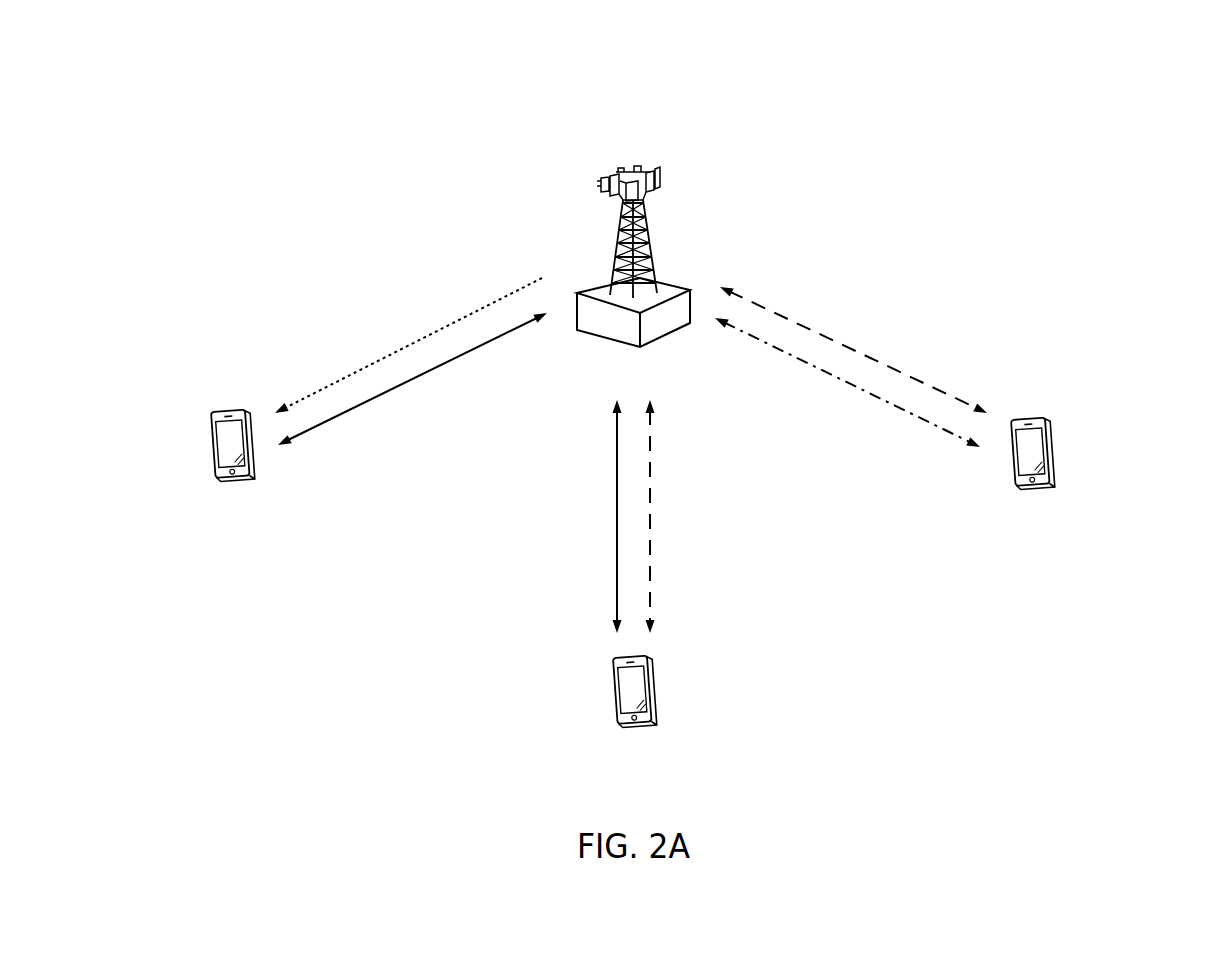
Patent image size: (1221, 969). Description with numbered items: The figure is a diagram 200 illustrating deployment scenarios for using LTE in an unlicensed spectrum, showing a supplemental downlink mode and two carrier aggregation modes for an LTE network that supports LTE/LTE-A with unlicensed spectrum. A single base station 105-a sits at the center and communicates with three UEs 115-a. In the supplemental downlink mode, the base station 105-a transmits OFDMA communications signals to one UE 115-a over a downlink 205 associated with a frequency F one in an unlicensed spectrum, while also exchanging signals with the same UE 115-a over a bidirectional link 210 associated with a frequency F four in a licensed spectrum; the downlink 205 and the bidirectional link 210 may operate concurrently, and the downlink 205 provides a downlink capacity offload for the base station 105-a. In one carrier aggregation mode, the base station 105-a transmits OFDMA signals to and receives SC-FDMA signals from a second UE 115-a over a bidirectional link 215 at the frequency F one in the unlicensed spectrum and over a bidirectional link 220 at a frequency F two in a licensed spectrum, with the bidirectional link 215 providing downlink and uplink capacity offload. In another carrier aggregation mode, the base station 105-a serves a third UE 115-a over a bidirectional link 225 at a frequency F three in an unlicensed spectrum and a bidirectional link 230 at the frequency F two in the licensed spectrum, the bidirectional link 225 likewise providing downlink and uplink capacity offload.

The diagram 200 is at (1147, 83).
The base station 105-a is at (655, 185).
The UE 115-a is at (213, 416).
The downlink 205 is at (435, 335).
The bidirectional link 210 is at (443, 367).
The bidirectional link 215 is at (613, 477).
The bidirectional link 220 is at (652, 490).
The bidirectional link 225 is at (810, 367).
The bidirectional link 230 is at (815, 335).